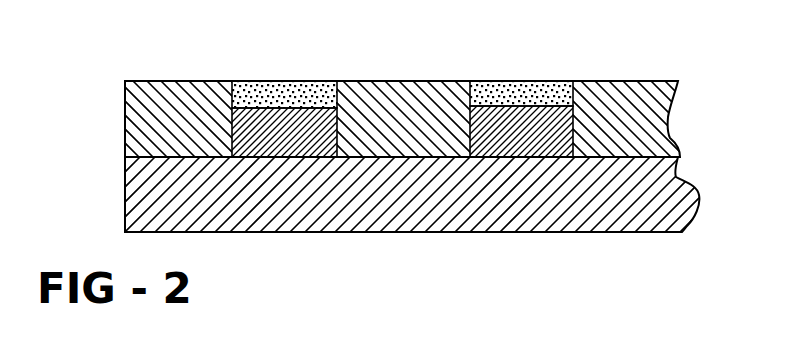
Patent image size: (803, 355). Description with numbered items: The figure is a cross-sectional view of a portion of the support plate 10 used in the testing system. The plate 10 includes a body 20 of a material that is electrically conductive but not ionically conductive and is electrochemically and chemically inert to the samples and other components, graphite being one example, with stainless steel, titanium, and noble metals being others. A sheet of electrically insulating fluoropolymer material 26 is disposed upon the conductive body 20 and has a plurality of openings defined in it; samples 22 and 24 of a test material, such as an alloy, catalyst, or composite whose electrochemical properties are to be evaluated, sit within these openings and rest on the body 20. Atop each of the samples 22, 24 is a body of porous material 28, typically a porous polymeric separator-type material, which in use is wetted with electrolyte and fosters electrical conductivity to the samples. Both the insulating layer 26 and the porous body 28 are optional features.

The support plate 10 is at (119, 58).
The body 20 is at (155, 197).
The sample 22 is at (356, 130).
The sample 24 is at (573, 130).
The sheet of fluoropolymer material 26 is at (160, 107).
The body of porous material 28 is at (291, 81).